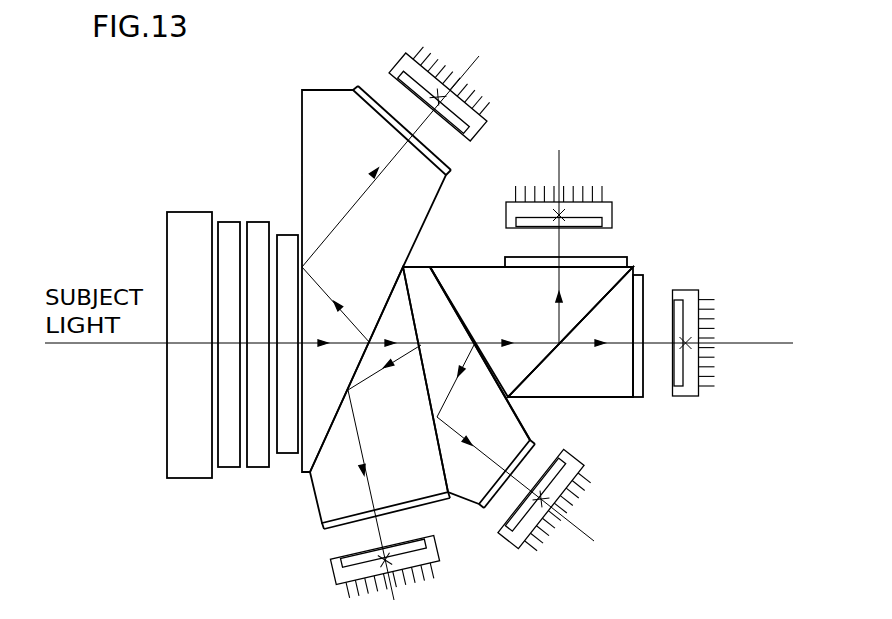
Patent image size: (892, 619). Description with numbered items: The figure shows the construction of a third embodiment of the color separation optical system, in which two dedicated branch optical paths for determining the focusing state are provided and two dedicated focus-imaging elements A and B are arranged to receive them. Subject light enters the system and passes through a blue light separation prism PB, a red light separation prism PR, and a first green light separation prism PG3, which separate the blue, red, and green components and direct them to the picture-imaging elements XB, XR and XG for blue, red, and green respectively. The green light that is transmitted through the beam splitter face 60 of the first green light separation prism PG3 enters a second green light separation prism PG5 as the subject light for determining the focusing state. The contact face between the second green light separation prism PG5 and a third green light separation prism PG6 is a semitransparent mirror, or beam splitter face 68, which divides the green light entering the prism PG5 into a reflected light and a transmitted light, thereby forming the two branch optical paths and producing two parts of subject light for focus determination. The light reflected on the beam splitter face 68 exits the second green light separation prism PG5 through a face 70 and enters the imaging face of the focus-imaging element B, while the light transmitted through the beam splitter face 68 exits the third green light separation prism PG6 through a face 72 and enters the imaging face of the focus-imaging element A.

The blue light separation prism PB is at (325, 173).
The red light separation prism PR is at (338, 488).
The first green light separation prism PG3 is at (468, 465).
The second green light separation prism PG5 is at (470, 282).
The third green light separation prism PG6 is at (605, 378).
The beam splitter face 60 is at (490, 372).
The beam splitter face 68 is at (595, 298).
The face 70 is at (600, 257).
The face 72 is at (647, 306).
The focus-imaging element A is at (690, 392).
The focus-imaging element B is at (607, 206).
The picture-imaging element for blue XB is at (403, 65).
The picture-imaging element for green XG is at (580, 450).
The picture-imaging element for red XR is at (427, 552).